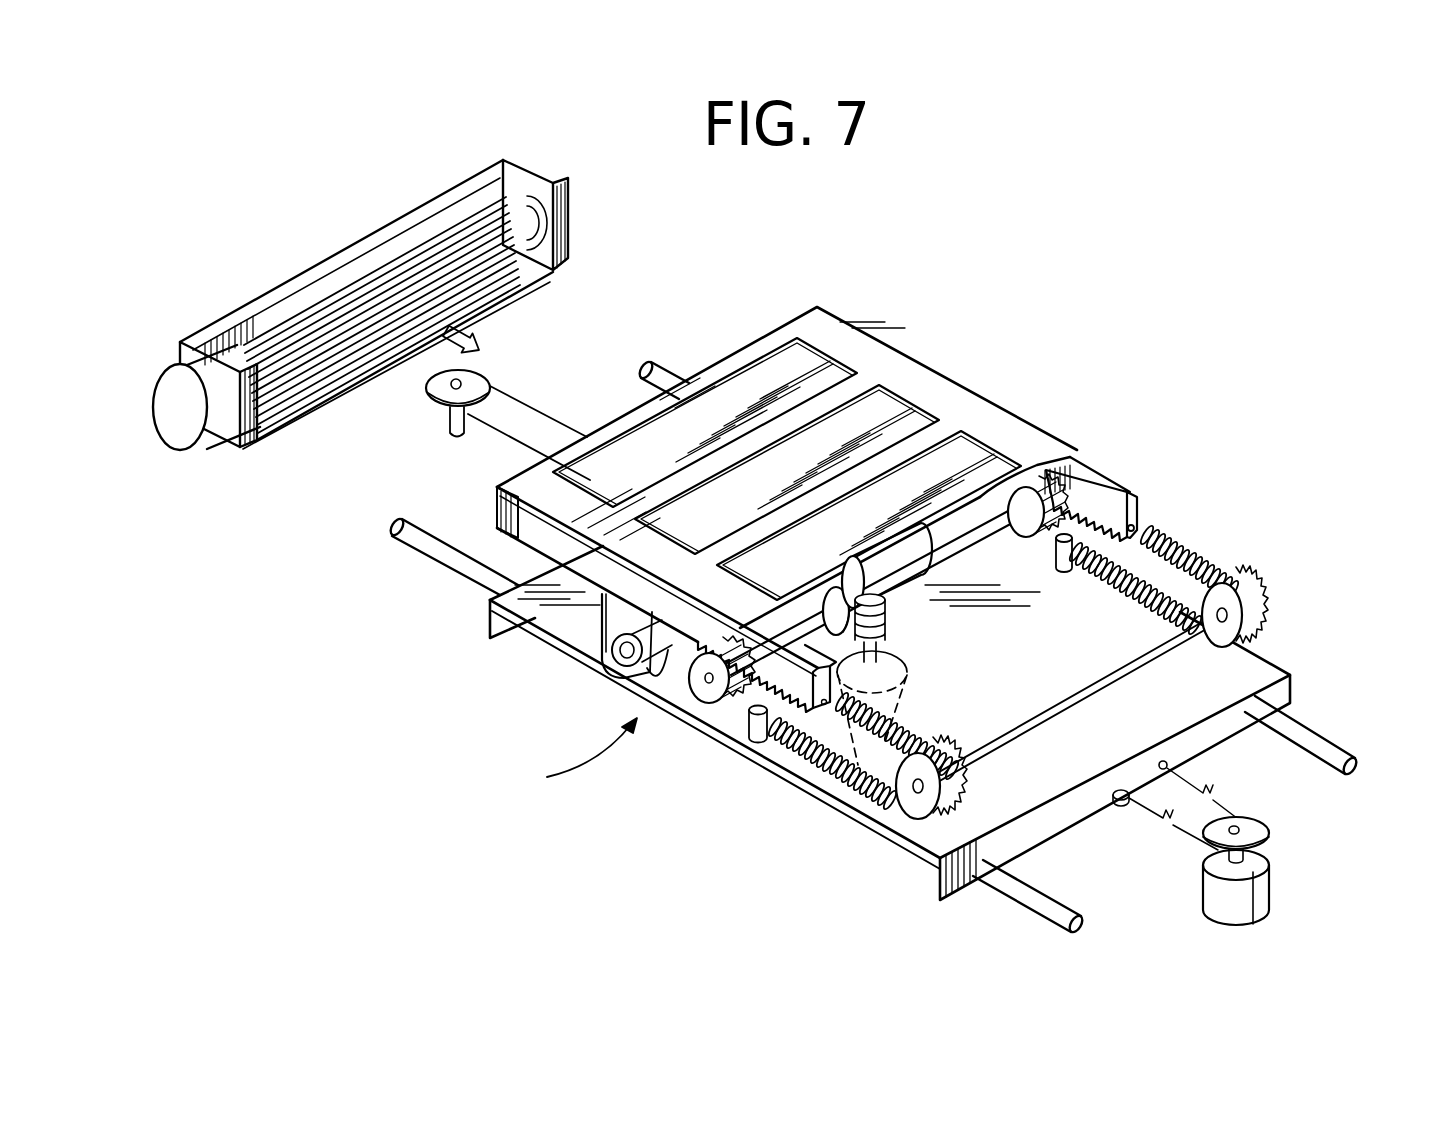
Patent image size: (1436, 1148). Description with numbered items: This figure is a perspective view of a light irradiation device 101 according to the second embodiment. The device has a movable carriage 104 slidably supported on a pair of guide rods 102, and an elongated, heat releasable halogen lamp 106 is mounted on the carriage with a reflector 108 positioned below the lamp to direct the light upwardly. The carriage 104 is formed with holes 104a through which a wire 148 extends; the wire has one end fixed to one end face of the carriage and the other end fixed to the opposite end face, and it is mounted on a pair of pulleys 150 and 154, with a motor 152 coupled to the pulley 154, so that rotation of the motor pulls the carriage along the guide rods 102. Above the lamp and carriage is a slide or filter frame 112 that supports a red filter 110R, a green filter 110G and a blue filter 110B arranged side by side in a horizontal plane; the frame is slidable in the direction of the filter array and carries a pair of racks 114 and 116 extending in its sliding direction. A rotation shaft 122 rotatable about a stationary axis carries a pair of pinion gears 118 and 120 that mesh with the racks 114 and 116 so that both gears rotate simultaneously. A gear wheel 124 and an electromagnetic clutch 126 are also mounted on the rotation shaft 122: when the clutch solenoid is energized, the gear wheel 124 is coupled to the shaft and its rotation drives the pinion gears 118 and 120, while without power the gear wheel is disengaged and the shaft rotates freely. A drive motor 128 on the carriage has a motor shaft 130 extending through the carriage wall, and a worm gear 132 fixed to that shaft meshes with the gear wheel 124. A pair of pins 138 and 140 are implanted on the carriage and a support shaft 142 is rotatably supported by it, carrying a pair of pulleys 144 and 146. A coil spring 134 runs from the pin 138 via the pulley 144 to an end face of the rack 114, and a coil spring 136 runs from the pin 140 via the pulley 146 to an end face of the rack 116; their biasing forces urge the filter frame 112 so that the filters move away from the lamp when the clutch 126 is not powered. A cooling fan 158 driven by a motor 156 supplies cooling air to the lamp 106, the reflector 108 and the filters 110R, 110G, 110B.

The light irradiation device 101 is at (571, 760).
The guide rods 102 is at (1313, 738).
The movable carriage 104 is at (890, 729).
The holes 104a is at (1170, 763).
The halogen lamp 106 is at (588, 658).
The reflector 108 is at (632, 690).
The red filter 110R is at (767, 380).
The green filter 110G is at (903, 410).
The blue filter 110B is at (970, 463).
The filter frame 112 is at (495, 478).
The rack 114 is at (590, 563).
The rack 116 is at (1120, 492).
The pinion gear 118 is at (708, 703).
The pinion gear 120 is at (933, 572).
The rotation shaft 122 is at (1060, 450).
The gear wheel 124 is at (838, 655).
The electromagnetic clutch 126 is at (1141, 499).
The drive motor 128 is at (863, 800).
The motor shaft 130 is at (850, 774).
The worm gear 132 is at (809, 773).
The coil spring 134 is at (820, 795).
The coil spring 136 is at (1200, 557).
The pin 138 is at (748, 745).
The pin 140 is at (1135, 530).
The support shaft 142 is at (1175, 660).
The pulley 144 is at (893, 826).
The pulley 146 is at (1263, 606).
The wire 148 is at (1183, 787).
The pulley 150 is at (463, 372).
The motor 152 is at (1250, 900).
The pulley 154 is at (1254, 838).
The motor 156 is at (190, 430).
The cooling fan 158 is at (385, 283).